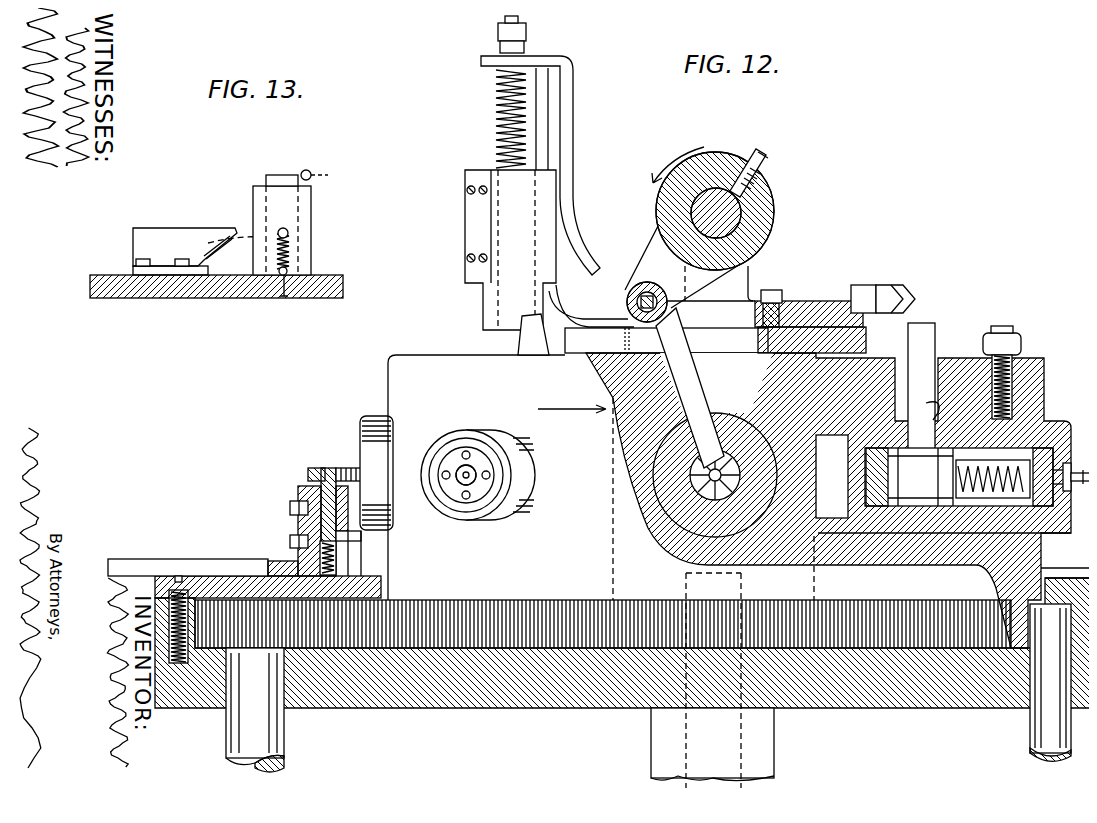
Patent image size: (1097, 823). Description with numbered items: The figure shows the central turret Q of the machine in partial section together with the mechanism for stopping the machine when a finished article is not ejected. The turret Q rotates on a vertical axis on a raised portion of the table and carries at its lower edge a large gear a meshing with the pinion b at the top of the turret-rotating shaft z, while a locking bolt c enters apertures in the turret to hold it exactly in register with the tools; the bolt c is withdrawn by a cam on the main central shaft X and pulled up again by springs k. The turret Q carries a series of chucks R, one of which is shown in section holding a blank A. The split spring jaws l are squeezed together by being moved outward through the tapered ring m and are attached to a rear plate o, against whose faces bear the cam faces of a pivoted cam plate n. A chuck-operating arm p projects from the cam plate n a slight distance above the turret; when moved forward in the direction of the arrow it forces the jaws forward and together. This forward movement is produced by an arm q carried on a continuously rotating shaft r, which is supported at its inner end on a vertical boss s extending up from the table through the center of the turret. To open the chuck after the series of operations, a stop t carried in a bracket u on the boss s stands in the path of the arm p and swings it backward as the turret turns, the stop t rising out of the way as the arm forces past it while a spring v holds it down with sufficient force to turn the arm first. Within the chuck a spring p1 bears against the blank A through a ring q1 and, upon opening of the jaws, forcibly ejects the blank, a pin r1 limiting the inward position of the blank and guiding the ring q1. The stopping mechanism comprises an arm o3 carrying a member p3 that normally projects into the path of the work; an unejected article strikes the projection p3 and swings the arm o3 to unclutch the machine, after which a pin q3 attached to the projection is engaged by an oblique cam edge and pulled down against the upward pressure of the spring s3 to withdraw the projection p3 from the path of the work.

In FIG. 12, the spring v is at (488, 110).
In FIG. 12, the stop t is at (510, 250).
In FIG. 12, the bracket u is at (658, 309).
In FIG. 12, the arm q is at (642, 273).
In FIG. 12, the shaft r is at (766, 190).
In FIG. 12, the vertical boss s is at (780, 292).
In FIG. 12, the chuck-operating arm p is at (726, 388).
In FIG. 12, the rear plate o is at (925, 402).
In FIG. 12, the cam plate n is at (714, 456).
In FIG. 12, the springs k is at (1063, 428).
In FIG. 12, the split spring jaws l is at (462, 478).
In FIG. 12, the spring p1 is at (1038, 410).
In FIG. 12, the ring q1 is at (1062, 500).
In FIG. 12, the pin r1 is at (945, 557).
In FIG. 12, the chuck R is at (383, 445).
In FIG. 12, the turret Q is at (486, 477).
In FIG. 12, the gear a is at (505, 600).
In FIG. 12, the tapered ring m is at (458, 444).
In FIG. 12, the pinion b is at (248, 645).
In FIG. 12, the turret-rotating shaft z is at (255, 710).
In FIG. 12, the main central shaft X is at (725, 735).
In FIG. 12, the locking bolt c is at (1050, 682).
In FIG. 13, the blank A is at (323, 169).
In FIG. 12, the blank A is at (343, 458).
In FIG. 13, the projection p3 is at (267, 175).
In FIG. 12, the projection p3 is at (290, 486).
In FIG. 13, the arm o3 is at (303, 208).
In FIG. 12, the arm o3 is at (163, 552).
In FIG. 13, the pin q3 is at (282, 229).
In FIG. 12, the pin q3 is at (338, 535).
In FIG. 13, the spring s3 is at (277, 290).
In FIG. 12, the spring s3 is at (360, 550).